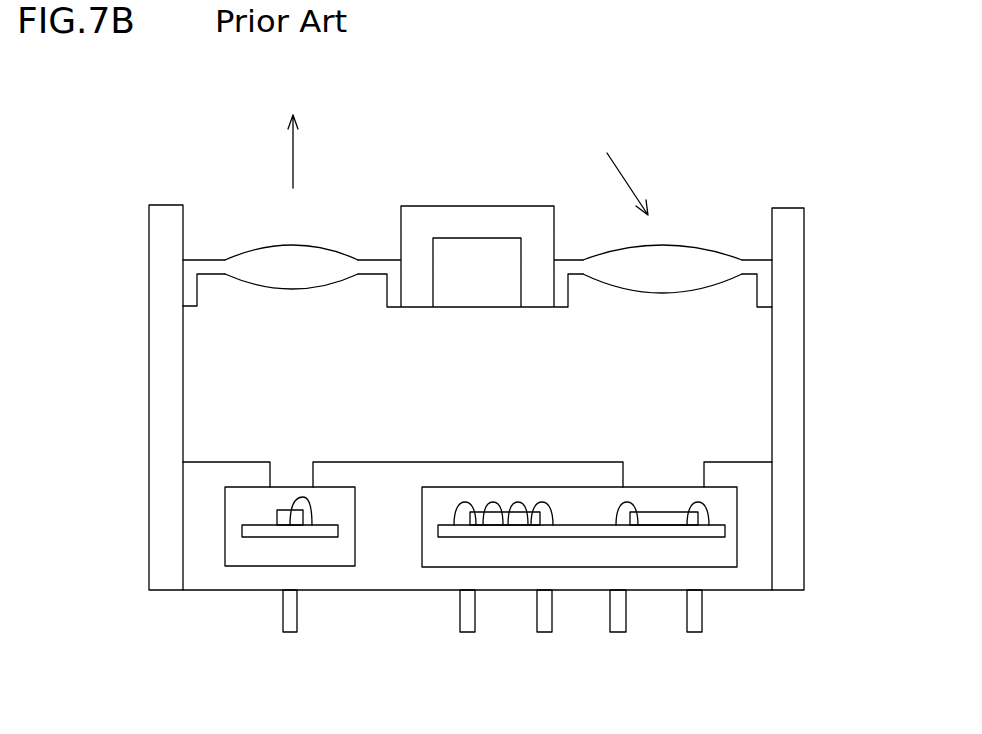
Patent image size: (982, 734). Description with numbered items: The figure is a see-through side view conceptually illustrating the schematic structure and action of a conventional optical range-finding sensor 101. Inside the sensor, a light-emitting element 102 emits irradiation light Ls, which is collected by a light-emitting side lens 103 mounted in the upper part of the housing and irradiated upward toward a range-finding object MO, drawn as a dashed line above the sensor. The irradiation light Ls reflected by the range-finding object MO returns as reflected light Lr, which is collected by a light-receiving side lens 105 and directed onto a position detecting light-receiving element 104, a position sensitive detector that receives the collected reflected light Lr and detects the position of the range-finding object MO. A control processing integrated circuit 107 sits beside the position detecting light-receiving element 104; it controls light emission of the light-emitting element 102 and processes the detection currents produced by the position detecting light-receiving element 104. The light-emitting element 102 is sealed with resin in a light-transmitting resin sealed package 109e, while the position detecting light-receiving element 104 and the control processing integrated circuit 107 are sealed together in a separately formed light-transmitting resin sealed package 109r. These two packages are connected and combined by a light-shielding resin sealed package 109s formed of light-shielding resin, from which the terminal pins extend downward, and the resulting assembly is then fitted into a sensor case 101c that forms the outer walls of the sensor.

The optical range-finding sensor 101 is at (868, 98).
The sensor case 101c is at (797, 350).
The light-emitting element 102 is at (287, 518).
The light-emitting side lens 103 is at (270, 257).
The position detecting light-receiving element 104 is at (675, 518).
The light-receiving side lens 105 is at (682, 256).
The control processing integrated circuit 107 is at (507, 518).
The light-transmitting resin sealed package 109e is at (323, 549).
The light-transmitting resin sealed package 109r is at (582, 552).
The light-shielding resin sealed package 109s is at (400, 567).
The range-finding object MO is at (217, 82).
The irradiation light Ls is at (293, 155).
The reflected light Lr is at (625, 175).